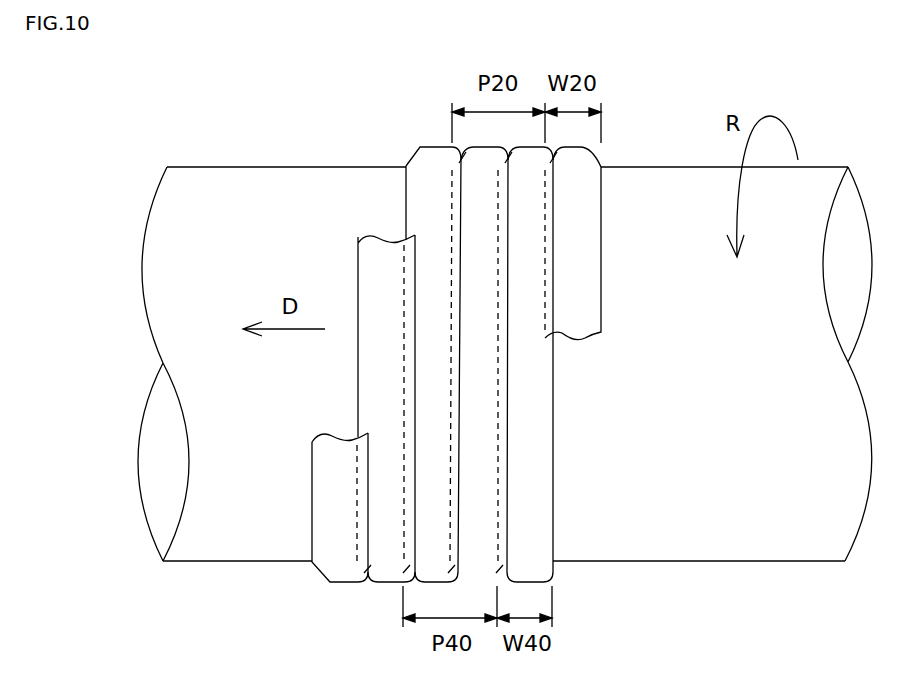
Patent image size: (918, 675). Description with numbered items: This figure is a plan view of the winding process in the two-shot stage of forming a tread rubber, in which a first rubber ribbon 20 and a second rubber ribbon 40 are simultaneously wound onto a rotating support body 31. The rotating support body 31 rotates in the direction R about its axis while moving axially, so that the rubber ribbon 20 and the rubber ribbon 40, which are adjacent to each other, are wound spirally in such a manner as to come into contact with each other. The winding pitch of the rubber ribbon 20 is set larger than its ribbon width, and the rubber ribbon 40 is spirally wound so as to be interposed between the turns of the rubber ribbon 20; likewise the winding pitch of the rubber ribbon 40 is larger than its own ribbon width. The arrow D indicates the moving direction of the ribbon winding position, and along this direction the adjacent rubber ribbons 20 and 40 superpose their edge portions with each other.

The first rubber ribbon 20 is at (358, 372).
The second rubber ribbon 40 is at (413, 205).
The rotating support body 31 is at (705, 540).